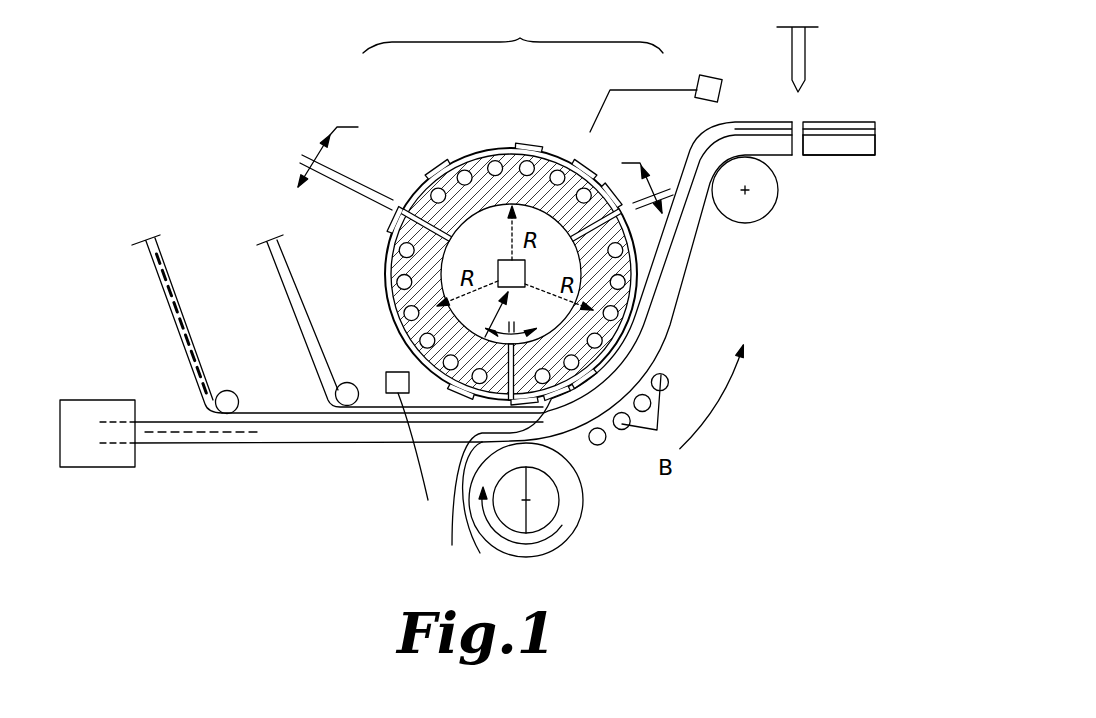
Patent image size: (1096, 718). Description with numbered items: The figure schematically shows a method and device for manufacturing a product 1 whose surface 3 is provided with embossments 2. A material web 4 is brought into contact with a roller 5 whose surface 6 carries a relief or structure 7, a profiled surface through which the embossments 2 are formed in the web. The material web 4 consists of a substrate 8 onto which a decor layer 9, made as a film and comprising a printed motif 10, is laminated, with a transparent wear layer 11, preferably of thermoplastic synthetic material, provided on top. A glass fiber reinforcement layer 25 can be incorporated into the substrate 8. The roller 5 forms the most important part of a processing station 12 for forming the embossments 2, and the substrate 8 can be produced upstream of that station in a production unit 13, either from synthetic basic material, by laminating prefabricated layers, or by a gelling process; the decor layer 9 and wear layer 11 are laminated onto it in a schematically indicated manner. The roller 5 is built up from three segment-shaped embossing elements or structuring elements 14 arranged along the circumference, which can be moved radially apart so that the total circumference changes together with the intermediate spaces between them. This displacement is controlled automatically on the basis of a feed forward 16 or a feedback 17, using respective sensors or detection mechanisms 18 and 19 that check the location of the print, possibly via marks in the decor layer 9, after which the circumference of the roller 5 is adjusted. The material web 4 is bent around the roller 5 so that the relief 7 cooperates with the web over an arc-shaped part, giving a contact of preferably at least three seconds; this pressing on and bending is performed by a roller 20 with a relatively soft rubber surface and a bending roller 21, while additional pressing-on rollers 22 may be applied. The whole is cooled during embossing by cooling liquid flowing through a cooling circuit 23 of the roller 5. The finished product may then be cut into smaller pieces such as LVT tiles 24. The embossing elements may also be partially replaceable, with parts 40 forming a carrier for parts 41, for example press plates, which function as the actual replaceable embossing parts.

The product 1 is at (825, 160).
The embossments 2 is at (767, 122).
The surface 3 is at (741, 108).
The material web 4 is at (388, 456).
The roller 5 is at (390, 200).
The surface 6 is at (548, 142).
The relief or structure 7 is at (510, 143).
The substrate 8 is at (290, 433).
The decor layer 9 is at (178, 325).
The printed motif 10 is at (175, 282).
The transparent wear layer 11 is at (290, 292).
The processing station 12 is at (513, 34).
The production unit 13 is at (103, 453).
The segment-shaped embossing elements or structuring elements 14 is at (475, 160).
The feed forward 16 is at (388, 374).
The feedback 17 is at (632, 88).
The sensor or detection mechanism 18 is at (420, 459).
The sensor or detection mechanism 19 is at (700, 77).
The roller 20 is at (550, 543).
The bending roller 21 is at (753, 212).
The rollers 22 is at (638, 412).
The cooling circuit 23 is at (463, 172).
The LVT tiles 24 is at (853, 145).
The glass fiber reinforcement layer 25 is at (190, 433).
The parts forming a carrier 40 is at (393, 207).
The parts functioning as embossing parts 41 is at (527, 268).